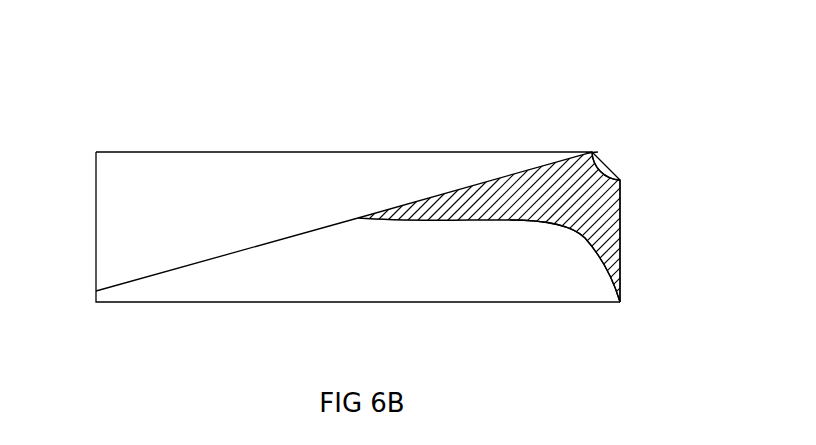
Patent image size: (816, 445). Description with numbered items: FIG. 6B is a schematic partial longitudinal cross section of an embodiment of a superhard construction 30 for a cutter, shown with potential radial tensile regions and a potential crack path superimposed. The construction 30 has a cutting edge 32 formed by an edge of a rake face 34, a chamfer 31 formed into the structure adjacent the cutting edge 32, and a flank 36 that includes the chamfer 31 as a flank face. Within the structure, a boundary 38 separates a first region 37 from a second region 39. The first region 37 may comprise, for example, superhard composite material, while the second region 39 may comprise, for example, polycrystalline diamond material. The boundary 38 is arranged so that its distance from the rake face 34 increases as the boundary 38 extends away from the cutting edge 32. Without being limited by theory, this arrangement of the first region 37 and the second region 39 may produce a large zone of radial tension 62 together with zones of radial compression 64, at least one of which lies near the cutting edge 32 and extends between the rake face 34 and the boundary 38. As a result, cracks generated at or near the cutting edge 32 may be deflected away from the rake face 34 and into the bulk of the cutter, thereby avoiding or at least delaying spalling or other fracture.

The superhard construction 30 is at (196, 96).
The chamfer 31 is at (608, 166).
The cutting edge 32 is at (592, 152).
The rake face 34 is at (522, 130).
The flank 36 is at (646, 164).
The first region 37 is at (329, 170).
The boundary 38 is at (395, 206).
The second region 39 is at (540, 235).
The zone of radial tension 62 is at (583, 201).
The zones of radial compression 64 is at (120, 261).